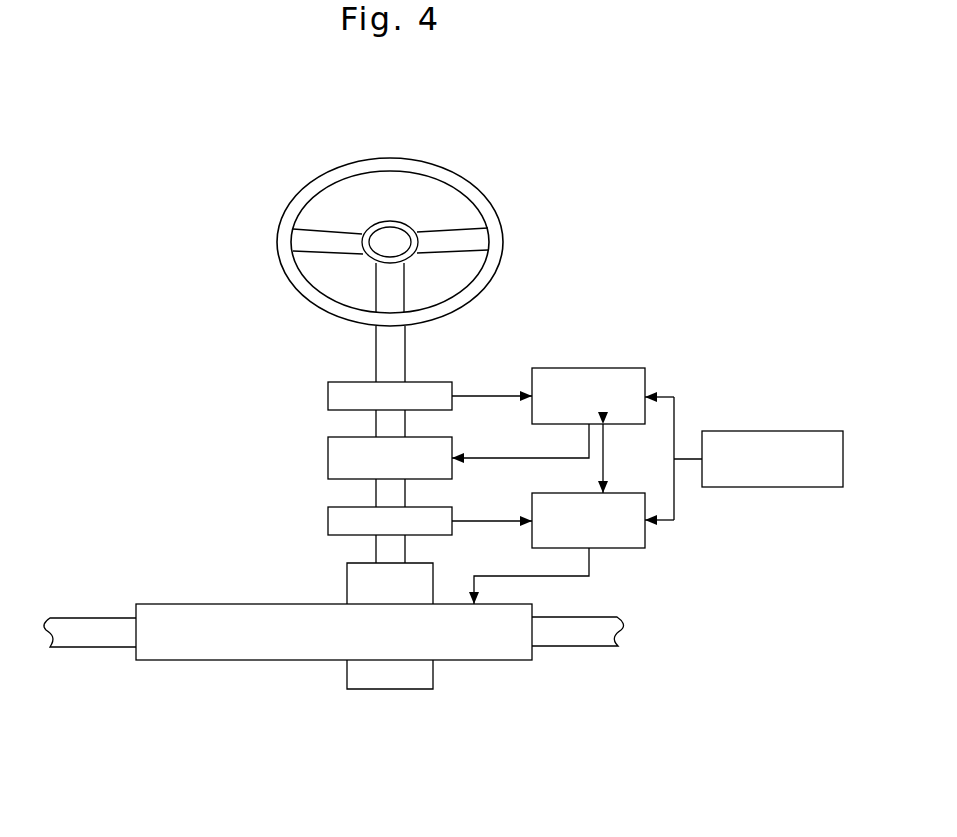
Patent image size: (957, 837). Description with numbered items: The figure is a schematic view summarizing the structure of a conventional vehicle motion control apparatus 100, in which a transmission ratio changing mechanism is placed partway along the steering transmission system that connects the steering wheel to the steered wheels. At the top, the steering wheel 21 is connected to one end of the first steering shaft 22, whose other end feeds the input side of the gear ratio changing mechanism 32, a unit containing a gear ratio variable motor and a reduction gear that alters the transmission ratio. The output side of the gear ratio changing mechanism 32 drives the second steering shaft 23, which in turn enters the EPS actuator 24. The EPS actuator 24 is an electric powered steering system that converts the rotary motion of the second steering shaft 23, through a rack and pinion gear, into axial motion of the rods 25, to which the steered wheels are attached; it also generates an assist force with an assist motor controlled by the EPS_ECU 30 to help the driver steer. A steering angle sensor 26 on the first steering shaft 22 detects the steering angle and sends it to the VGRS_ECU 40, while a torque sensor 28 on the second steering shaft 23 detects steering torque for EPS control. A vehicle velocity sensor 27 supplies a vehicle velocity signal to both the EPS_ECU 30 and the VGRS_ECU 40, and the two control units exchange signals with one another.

The vehicle motion control apparatus 100 is at (186, 265).
The steering wheel 21 is at (443, 168).
The first steering shaft 22 is at (405, 353).
The second steering shaft 23 is at (377, 552).
The EPS actuator 24 is at (258, 660).
The rods 25 is at (97, 647).
The steering angle sensor 26 is at (328, 399).
The vehicle velocity sensor 27 is at (770, 431).
The torque sensor 28 is at (328, 524).
The EPS_ECU 30 is at (615, 548).
The gear ratio changing mechanism 32 is at (328, 461).
The VGRS_ECU 40 is at (587, 368).